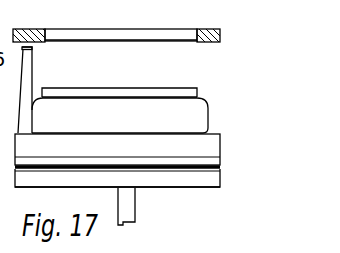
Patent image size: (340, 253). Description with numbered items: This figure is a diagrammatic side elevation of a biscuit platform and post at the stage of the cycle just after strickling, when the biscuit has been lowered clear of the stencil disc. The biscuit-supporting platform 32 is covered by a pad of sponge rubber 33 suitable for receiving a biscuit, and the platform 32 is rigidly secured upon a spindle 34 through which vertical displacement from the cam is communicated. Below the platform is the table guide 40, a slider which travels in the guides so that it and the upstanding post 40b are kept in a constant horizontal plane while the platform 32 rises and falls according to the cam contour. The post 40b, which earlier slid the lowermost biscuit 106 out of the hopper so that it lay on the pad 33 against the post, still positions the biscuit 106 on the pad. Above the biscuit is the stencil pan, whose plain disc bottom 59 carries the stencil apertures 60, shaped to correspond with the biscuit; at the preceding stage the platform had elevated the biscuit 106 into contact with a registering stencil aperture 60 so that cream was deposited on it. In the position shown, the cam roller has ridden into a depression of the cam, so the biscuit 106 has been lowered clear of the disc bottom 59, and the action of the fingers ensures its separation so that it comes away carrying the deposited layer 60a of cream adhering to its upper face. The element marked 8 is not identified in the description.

The end block 8 is at (39, 22).
The stencil aperture 60 is at (157, 38).
The disc bottom 59 is at (209, 29).
The post 40b is at (28, 68).
The deposited layer of cream 60a is at (122, 93).
The biscuit 106 is at (197, 110).
The sponge rubber 33 is at (203, 148).
The platform 32 is at (193, 162).
The table guide 40 is at (164, 186).
The spindle 34 is at (126, 211).